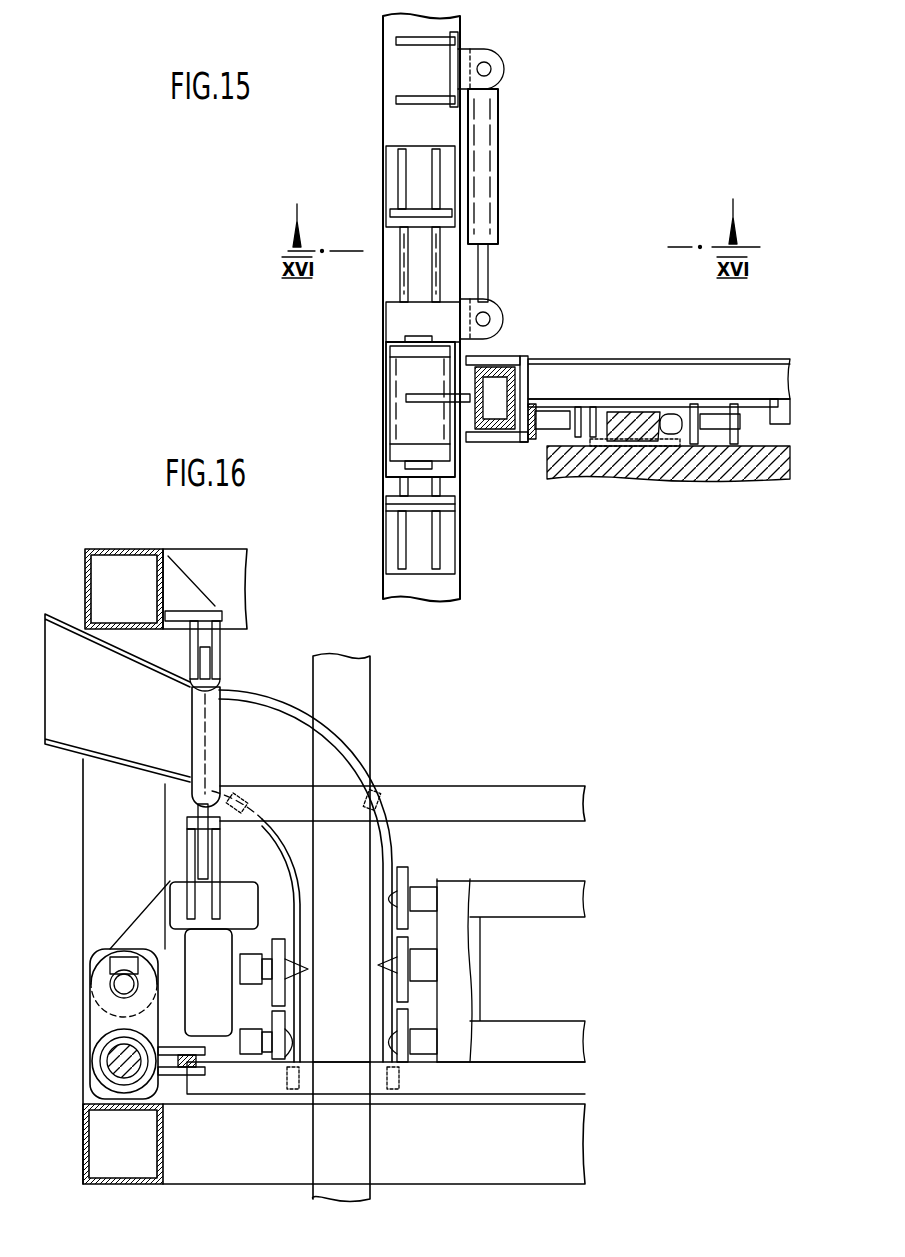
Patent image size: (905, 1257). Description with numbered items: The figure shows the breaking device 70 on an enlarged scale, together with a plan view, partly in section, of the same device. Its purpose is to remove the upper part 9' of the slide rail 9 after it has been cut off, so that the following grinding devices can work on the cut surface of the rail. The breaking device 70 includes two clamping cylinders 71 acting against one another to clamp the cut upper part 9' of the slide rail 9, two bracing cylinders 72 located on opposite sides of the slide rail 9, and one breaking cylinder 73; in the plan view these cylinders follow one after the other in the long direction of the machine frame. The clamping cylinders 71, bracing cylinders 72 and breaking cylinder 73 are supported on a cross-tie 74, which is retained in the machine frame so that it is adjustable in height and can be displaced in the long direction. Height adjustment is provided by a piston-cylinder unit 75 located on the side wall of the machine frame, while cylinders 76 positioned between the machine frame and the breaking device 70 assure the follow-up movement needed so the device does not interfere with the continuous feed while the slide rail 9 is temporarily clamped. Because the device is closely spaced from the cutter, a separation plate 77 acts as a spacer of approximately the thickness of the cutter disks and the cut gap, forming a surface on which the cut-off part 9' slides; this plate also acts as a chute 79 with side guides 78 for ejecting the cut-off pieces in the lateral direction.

In FIG. 15, the slide rail 9 is at (668, 487).
In FIG. 16, the slide rail 9 is at (366, 928).
In FIG. 15, the upper part of the slide rail 9' is at (644, 380).
In FIG. 16, the upper part of the slide rail 9' is at (348, 1089).
In FIG. 15, the breaking device 70 is at (542, 332).
In FIG. 16, the breaking device 70 is at (550, 874).
In FIG. 16, the clamping cylinders 71 is at (275, 1056).
In FIG. 16, the bracing cylinders 72 is at (263, 968).
In FIG. 16, the breaking cylinder 73 is at (420, 895).
In FIG. 15, the cross-tie 74 is at (620, 375).
In FIG. 15, the piston-cylinder unit 75 is at (497, 195).
In FIG. 16, the cylinders 76 is at (200, 722).
In FIG. 15, the separation plate 77 is at (645, 443).
In FIG. 16, the side guides 78 is at (283, 840).
In FIG. 16, the chute 79 is at (88, 735).